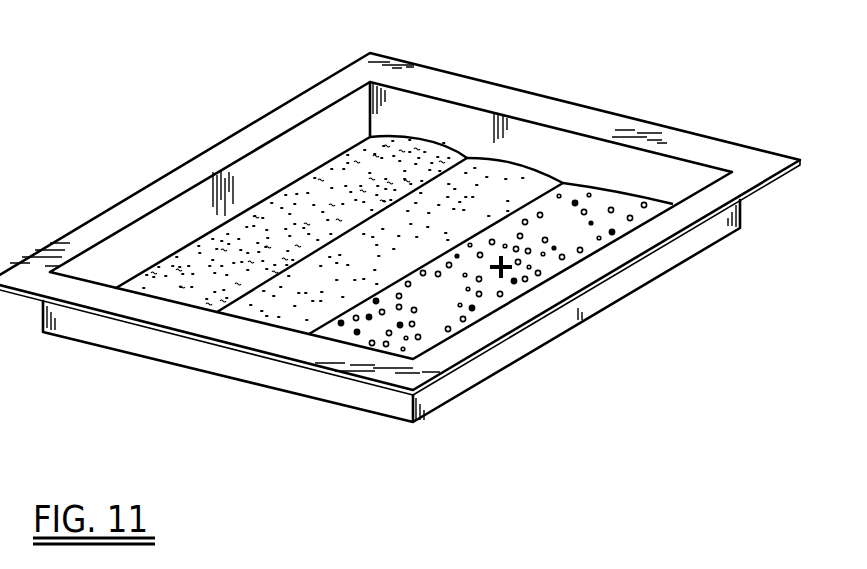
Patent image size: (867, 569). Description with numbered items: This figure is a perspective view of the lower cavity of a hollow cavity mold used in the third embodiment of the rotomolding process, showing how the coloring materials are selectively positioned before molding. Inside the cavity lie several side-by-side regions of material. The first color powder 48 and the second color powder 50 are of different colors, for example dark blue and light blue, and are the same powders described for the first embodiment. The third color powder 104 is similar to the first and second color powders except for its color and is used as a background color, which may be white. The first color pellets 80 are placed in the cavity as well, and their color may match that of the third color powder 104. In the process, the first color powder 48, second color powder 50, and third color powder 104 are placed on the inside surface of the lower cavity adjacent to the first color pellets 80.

The first color powder 48 is at (360, 148).
The second color powder 50 is at (483, 170).
The first color pellets 80 is at (338, 328).
The third color powder 104 is at (632, 213).